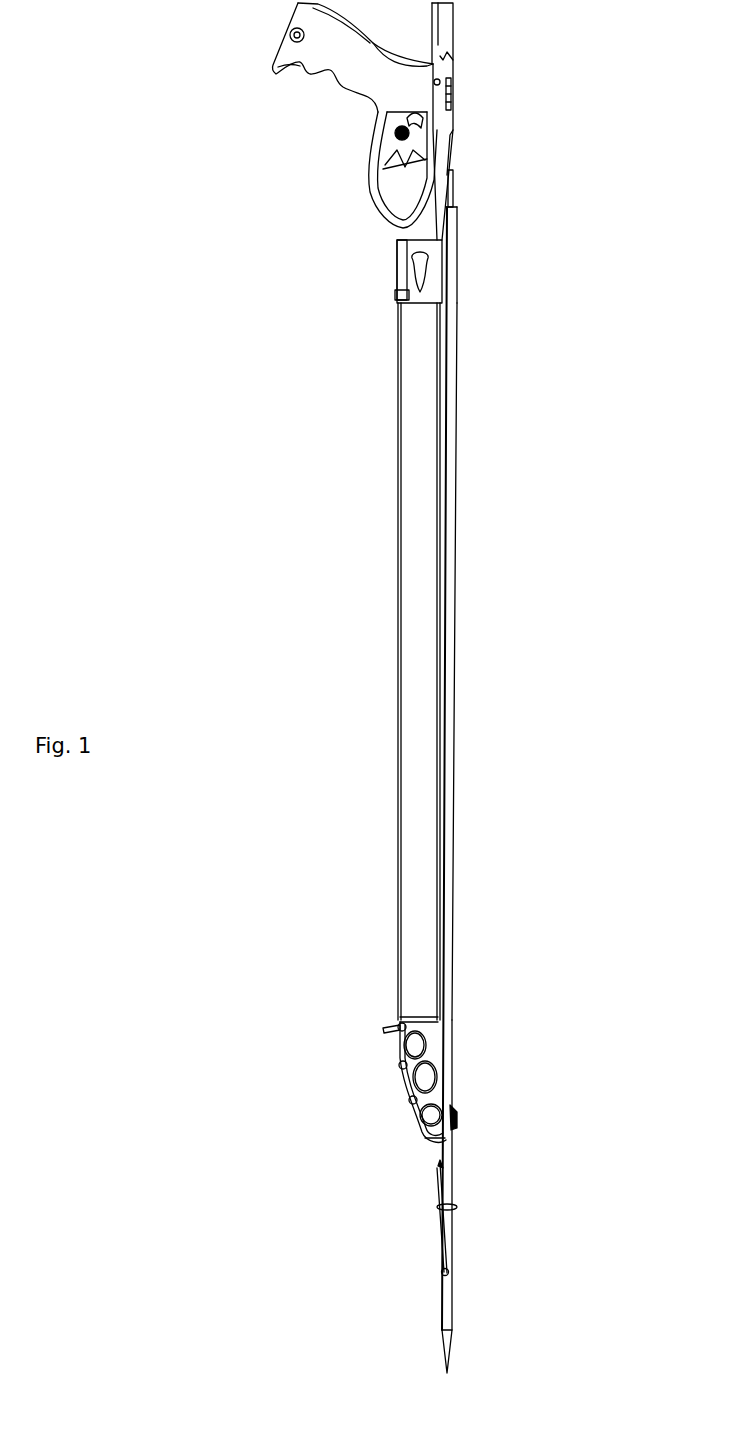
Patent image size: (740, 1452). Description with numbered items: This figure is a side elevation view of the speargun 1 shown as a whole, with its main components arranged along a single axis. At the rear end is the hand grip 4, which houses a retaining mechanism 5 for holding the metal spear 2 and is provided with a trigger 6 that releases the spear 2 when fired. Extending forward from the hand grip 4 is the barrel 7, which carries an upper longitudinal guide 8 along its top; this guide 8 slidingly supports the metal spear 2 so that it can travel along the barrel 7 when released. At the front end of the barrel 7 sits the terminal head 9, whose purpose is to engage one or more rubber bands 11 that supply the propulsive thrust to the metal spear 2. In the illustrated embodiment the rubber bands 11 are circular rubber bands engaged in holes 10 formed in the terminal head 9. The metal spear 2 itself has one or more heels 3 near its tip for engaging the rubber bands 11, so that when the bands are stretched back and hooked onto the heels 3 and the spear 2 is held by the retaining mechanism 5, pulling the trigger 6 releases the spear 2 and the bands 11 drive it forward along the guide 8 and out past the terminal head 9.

The speargun 1 is at (472, 535).
The metal spear 2 is at (452, 1288).
The heels 3 is at (460, 177).
The hand grip 4 is at (305, 72).
The retaining mechanism 5 is at (457, 108).
The trigger 6 is at (393, 165).
The barrel 7 is at (397, 712).
The upper longitudinal guide 8 is at (447, 588).
The terminal head 9 is at (403, 1103).
The holes 10 is at (431, 1118).
The rubber bands 11 is at (453, 897).